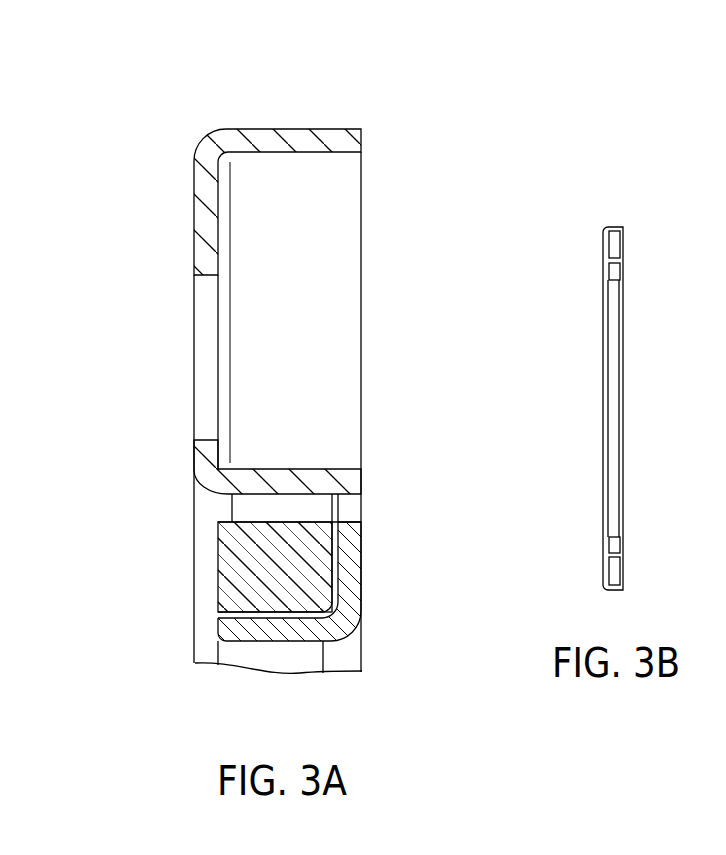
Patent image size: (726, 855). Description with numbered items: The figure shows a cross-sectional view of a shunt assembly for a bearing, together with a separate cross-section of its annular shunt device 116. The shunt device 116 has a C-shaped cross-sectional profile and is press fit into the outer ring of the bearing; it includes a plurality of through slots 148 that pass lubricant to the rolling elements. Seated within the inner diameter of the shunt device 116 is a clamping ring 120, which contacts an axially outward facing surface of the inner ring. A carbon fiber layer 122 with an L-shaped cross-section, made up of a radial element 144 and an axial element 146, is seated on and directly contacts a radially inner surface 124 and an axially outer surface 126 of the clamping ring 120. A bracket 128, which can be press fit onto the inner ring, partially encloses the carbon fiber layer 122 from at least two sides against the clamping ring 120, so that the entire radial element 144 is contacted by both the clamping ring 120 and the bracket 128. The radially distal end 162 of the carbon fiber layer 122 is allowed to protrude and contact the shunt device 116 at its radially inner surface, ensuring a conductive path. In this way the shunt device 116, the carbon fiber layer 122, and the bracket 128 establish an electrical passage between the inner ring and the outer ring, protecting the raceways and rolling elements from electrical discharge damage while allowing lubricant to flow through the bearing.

In FIG. 3A, the annular shunt device 116 is at (203, 175).
In FIG. 3B, the annular shunt device 116 is at (625, 240).
In FIG. 3A, the through slots 148 is at (202, 378).
In FIG. 3A, the radially distal end 162 is at (197, 471).
In FIG. 3A, the carbon fiber layer 122 is at (347, 497).
In FIG. 3A, the clamping ring 120 is at (232, 594).
In FIG. 3A, the axially outer surface 126 is at (323, 572).
In FIG. 3A, the radial element 144 is at (333, 542).
In FIG. 3A, the radially inner surface 124 is at (242, 607).
In FIG. 3A, the bracket 128 is at (348, 575).
In FIG. 3A, the axial element 146 is at (285, 622).